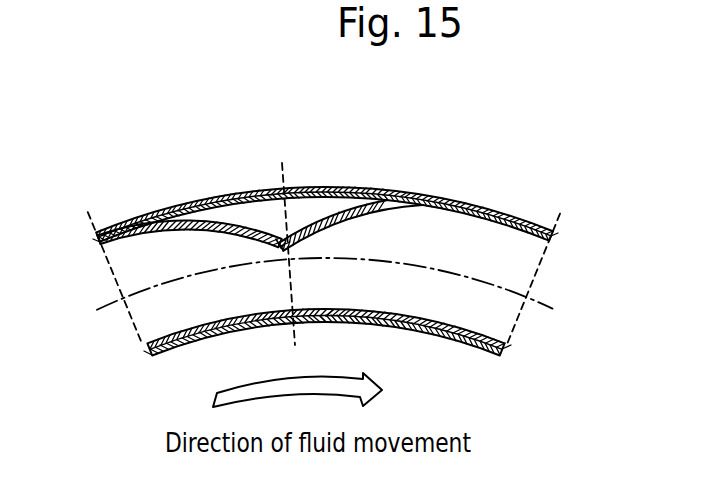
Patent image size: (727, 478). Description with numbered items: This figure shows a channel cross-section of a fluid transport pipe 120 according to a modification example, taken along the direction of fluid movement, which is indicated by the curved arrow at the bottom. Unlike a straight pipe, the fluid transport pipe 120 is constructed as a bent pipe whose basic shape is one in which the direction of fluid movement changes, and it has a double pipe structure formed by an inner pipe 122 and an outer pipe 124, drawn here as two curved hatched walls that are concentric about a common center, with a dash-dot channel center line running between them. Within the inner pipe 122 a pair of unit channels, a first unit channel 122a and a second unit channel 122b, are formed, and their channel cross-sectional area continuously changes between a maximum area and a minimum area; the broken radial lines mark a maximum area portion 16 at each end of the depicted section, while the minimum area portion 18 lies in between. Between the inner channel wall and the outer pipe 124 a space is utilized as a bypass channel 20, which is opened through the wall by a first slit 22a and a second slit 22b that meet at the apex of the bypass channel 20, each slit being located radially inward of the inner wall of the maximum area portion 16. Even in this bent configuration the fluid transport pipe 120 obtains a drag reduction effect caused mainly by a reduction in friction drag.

The fluid transport pipe 120 is at (520, 183).
The outer pipe 124 is at (440, 197).
The first slit 22a is at (228, 222).
The second slit 22b is at (330, 213).
The bypass channel 20 is at (302, 215).
The inner pipe 122 is at (520, 243).
The first unit channel 122a is at (197, 300).
The second unit channel 122b is at (432, 310).
The maximum area portion 16 is at (130, 318).
The minimum area portion 18 is at (283, 290).